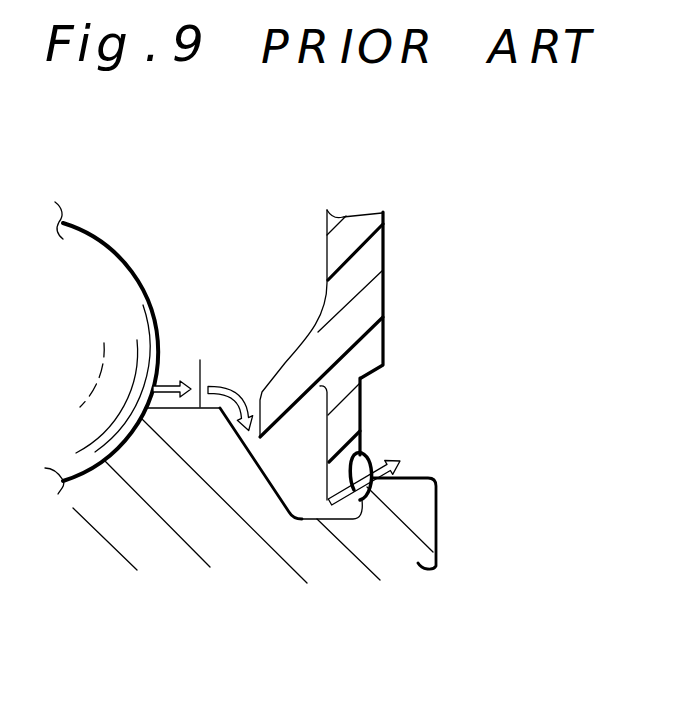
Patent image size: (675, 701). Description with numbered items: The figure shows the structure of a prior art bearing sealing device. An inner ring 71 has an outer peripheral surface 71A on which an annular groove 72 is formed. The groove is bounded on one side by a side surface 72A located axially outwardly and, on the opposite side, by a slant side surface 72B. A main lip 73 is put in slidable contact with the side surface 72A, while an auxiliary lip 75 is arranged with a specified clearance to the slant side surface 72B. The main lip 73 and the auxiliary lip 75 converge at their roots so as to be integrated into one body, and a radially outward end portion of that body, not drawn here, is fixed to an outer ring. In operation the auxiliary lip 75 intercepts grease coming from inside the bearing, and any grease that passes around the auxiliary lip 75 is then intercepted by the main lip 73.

The inner ring 71 is at (448, 523).
The outer peripheral surface 71A is at (200, 360).
The annular groove 72 is at (294, 495).
The side surface 72A is at (352, 453).
The slant side surface 72B is at (270, 456).
The main lip 73 is at (344, 419).
The auxiliary lip 75 is at (293, 380).